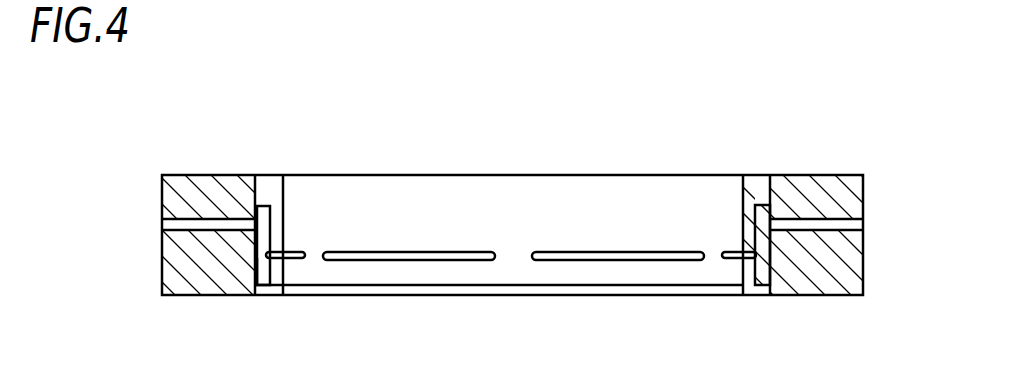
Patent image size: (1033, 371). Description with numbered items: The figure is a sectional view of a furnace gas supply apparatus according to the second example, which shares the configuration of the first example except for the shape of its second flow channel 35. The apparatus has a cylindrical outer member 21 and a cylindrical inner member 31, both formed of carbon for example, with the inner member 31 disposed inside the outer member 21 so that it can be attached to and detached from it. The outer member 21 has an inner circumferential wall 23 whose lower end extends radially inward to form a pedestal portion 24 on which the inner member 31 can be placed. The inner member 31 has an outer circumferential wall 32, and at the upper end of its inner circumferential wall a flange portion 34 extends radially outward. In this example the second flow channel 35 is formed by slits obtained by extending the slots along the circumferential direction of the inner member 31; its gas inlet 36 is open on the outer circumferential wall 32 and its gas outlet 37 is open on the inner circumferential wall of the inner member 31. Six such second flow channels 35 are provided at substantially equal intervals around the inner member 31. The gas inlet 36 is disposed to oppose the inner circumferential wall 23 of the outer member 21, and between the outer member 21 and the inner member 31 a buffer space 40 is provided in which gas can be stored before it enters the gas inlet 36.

The outer member 21 is at (217, 175).
The inner member 31 is at (757, 175).
The outer circumferential wall 32 is at (257, 208).
The inner circumferential wall 23 is at (262, 240).
The flange portion 34 is at (265, 205).
The second flow channel 35 is at (513, 241).
The gas inlet 36 is at (262, 262).
The gas outlet 37 is at (292, 260).
The buffer space 40 is at (768, 234).
The pedestal portion 24 is at (768, 275).